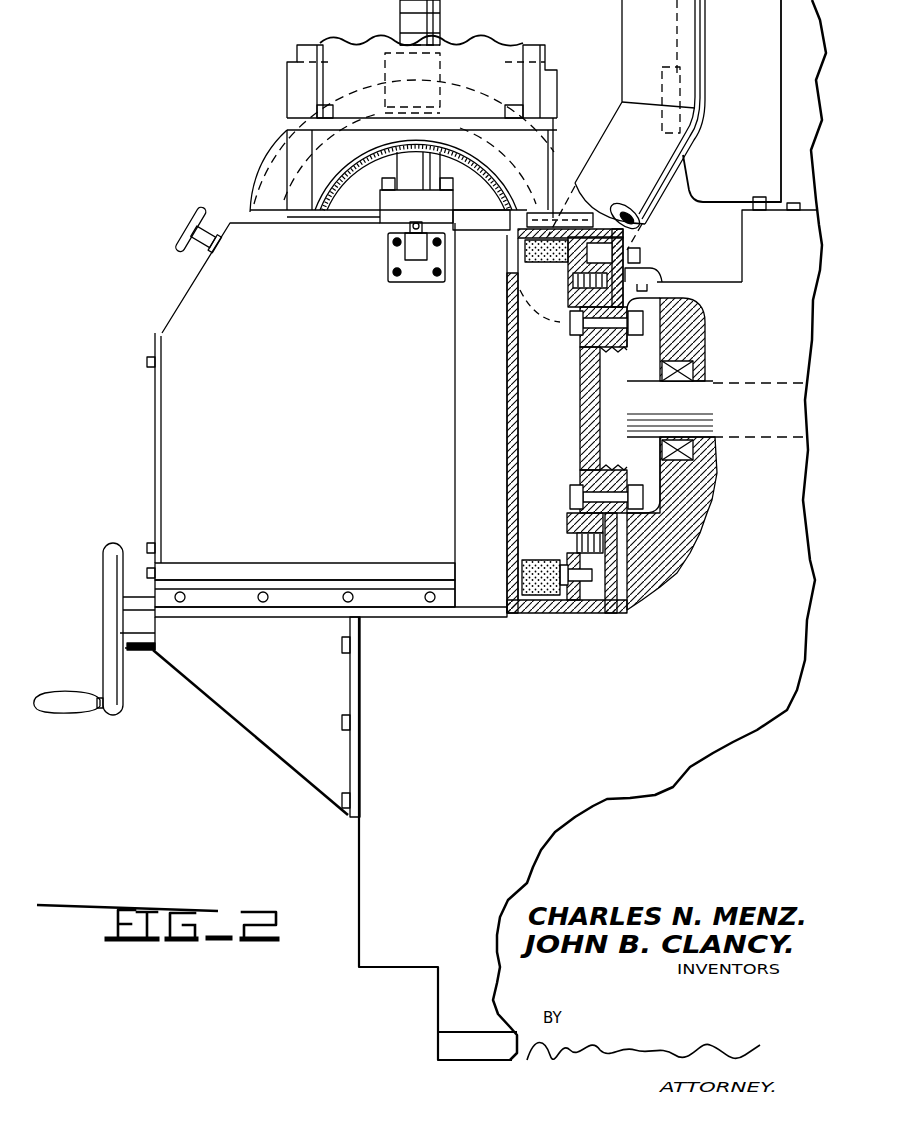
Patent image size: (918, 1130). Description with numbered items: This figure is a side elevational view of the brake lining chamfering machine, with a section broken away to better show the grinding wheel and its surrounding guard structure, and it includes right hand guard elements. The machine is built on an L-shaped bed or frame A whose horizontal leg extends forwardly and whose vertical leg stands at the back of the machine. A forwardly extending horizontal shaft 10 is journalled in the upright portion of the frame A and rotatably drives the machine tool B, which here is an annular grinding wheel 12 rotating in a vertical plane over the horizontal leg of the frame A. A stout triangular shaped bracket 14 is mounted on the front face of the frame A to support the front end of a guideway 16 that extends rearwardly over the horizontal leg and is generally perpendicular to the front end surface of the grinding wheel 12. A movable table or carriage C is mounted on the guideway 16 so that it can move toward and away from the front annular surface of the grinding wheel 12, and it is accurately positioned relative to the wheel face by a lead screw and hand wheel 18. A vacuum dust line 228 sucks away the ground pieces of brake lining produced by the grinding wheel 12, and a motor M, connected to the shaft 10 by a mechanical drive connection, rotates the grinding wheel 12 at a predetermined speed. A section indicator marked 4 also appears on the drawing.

The horizontal shaft 10 is at (696, 393).
The grinding wheel 12 is at (542, 598).
The triangular shaped bracket 14 is at (262, 740).
The guideway 16 is at (122, 598).
The lead screw and hand wheel 18 is at (101, 553).
The vacuum dust line 228 is at (605, 152).
The frame A is at (357, 843).
The machine tool B is at (505, 448).
The table C is at (152, 435).
The motor M is at (659, 530).
The section line 4 is at (415, 288).